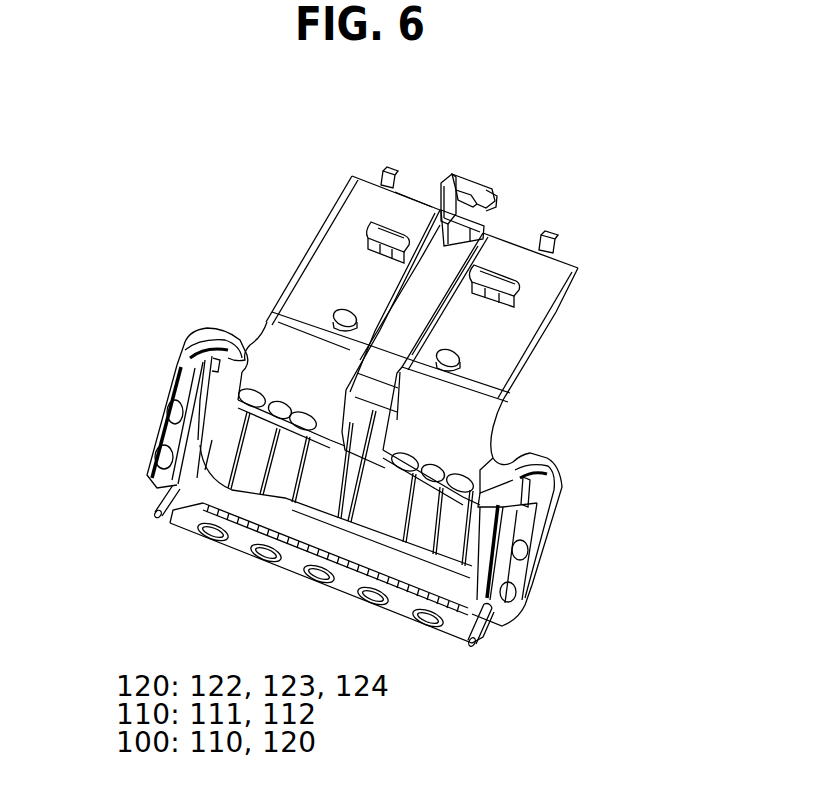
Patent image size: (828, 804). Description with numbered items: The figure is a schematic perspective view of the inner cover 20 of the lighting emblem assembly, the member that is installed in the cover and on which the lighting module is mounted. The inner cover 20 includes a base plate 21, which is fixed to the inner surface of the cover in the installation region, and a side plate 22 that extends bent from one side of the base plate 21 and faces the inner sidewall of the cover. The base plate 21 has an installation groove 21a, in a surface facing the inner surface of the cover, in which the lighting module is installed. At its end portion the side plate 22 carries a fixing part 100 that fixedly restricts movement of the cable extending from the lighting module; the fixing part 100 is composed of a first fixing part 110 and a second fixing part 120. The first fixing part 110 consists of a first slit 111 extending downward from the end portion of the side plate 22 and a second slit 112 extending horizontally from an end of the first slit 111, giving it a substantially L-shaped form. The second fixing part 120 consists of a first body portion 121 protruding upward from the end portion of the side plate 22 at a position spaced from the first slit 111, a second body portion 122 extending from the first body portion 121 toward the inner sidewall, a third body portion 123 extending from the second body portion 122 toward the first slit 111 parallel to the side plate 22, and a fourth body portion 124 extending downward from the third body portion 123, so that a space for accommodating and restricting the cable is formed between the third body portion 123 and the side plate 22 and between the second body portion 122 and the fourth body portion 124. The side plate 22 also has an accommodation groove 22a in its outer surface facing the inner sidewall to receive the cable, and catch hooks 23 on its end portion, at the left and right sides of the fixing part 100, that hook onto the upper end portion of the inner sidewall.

The inner cover 20 is at (204, 280).
The base plate 21 is at (345, 583).
The installation groove 21a is at (325, 495).
The side plate 22 is at (557, 300).
The accommodation groove 22a is at (413, 317).
The catch hooks 23 is at (382, 172).
The fixing part 100 is at (416, 241).
The first fixing part 110 is at (385, 269).
The first slit 111 is at (440, 217).
The second slit 112 is at (370, 247).
The second fixing part 120 is at (493, 184).
The first body portion 121 is at (480, 217).
The second body portion 122 is at (440, 195).
The third body portion 123 is at (495, 151).
The fourth body portion 124 is at (497, 193).